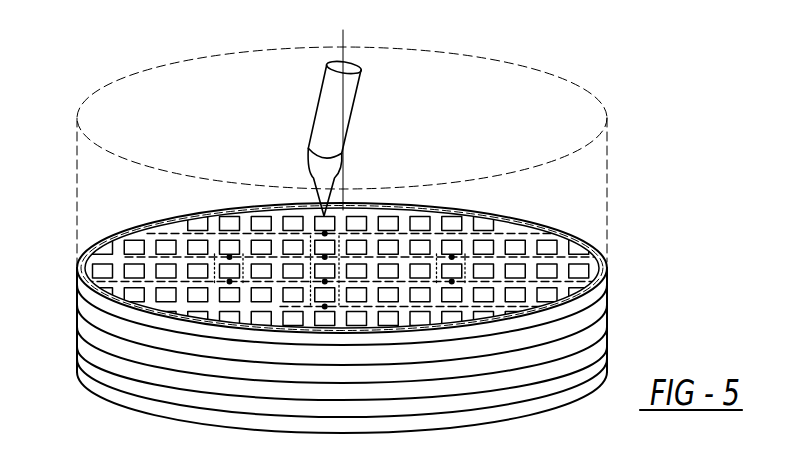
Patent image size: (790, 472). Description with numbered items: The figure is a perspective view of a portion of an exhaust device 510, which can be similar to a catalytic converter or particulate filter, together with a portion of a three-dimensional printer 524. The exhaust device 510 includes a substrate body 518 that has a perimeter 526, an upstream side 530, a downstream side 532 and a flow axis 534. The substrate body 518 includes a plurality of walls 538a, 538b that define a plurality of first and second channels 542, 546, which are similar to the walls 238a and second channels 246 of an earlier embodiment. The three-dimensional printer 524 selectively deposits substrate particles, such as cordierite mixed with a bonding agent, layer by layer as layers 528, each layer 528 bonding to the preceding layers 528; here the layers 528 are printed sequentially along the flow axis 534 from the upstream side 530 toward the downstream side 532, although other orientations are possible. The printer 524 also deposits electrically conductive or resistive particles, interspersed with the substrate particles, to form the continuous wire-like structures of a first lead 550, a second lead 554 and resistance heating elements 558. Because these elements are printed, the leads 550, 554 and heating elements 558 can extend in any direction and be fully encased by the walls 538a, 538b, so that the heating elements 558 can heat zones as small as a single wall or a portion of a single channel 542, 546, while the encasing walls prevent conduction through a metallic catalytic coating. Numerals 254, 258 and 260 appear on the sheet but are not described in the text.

The exhaust device 510 is at (640, 143).
The substrate body 518 is at (570, 322).
The three-dimensional printer 524 is at (318, 126).
The perimeter 526 is at (607, 321).
The layers 528 is at (89, 306).
The upstream side 530 is at (120, 403).
The downstream side 532 is at (179, 118).
The flow axis 534 is at (343, 92).
The walls 538a is at (437, 237).
The walls 538b is at (245, 224).
The first channels 542 is at (418, 226).
The second channels 546 is at (387, 226).
The first lead 550 is at (597, 258).
The second lead 554 is at (77, 266).
The resistance heating elements 558 is at (310, 246).
The walls 238a is at (455, 12).
The processor 254 is at (532, 12).
The memory 258 is at (587, 12).
The display 260 is at (620, 0).
The second channels 246 is at (676, 0).